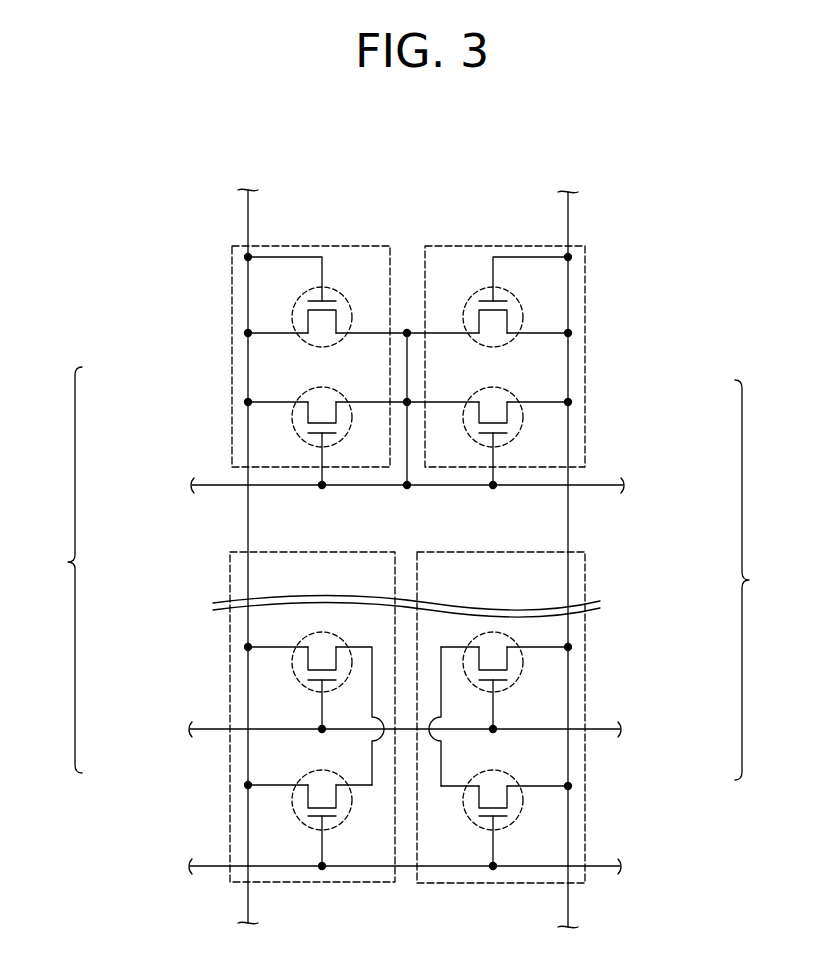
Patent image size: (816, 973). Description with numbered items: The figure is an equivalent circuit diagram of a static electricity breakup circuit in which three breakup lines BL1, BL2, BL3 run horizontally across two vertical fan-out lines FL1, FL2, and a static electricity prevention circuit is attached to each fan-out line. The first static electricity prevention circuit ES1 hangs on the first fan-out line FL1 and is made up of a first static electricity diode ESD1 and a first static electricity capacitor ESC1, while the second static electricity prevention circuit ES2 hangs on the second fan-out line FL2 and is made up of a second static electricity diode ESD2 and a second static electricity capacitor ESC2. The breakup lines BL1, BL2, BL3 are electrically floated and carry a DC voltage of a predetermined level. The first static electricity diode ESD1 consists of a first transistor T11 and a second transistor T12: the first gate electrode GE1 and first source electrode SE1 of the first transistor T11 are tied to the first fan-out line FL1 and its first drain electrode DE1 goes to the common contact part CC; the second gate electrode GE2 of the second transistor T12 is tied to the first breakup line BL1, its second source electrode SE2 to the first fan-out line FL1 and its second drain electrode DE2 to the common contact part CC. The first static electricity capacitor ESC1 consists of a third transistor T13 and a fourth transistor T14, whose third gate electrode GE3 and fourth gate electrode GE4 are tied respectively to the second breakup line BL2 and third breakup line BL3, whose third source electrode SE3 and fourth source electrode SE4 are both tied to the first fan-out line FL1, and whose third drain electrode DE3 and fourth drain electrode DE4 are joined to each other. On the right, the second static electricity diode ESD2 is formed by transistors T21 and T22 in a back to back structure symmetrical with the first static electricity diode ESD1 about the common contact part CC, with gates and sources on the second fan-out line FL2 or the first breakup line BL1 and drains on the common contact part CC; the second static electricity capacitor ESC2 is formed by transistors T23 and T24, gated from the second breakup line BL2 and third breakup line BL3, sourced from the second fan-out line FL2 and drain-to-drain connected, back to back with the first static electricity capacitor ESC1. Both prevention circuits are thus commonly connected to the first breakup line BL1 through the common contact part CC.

The first fan-out line FL1 is at (248, 213).
The second fan-out line FL2 is at (568, 212).
The first static electricity diode ESD1 is at (232, 380).
The second static electricity diode ESD2 is at (585, 390).
The first static electricity capacitor ESC1 is at (230, 757).
The second static electricity capacitor ESC2 is at (585, 768).
The first static electricity prevention circuit ES1 is at (52, 570).
The second static electricity prevention circuit ES2 is at (766, 580).
The first transistor T11 is at (303, 298).
The second transistor T12 is at (303, 440).
The third transistor T13 is at (302, 643).
The fourth transistor T14 is at (304, 825).
The first transistor T21 is at (522, 316).
The second transistor T22 is at (522, 418).
The third transistor T23 is at (522, 662).
The fourth transistor T24 is at (522, 797).
The first gate electrode GE1 is at (320, 296).
The second gate electrode GE2 is at (320, 470).
The third gate electrode GE3 is at (320, 705).
The fourth gate electrode GE4 is at (318, 852).
The first source electrode SE1 is at (306, 328).
The second source electrode SE2 is at (306, 410).
The third source electrode SE3 is at (306, 658).
The fourth source electrode SE4 is at (306, 795).
The first drain electrode DE1 is at (348, 320).
The second drain electrode DE2 is at (341, 412).
The third drain electrode DE3 is at (348, 657).
The fourth drain electrode DE4 is at (342, 800).
The common contact part CC is at (407, 488).
The first breakup line BL1 is at (432, 487).
The second breakup line BL2 is at (431, 729).
The third breakup line BL3 is at (431, 866).